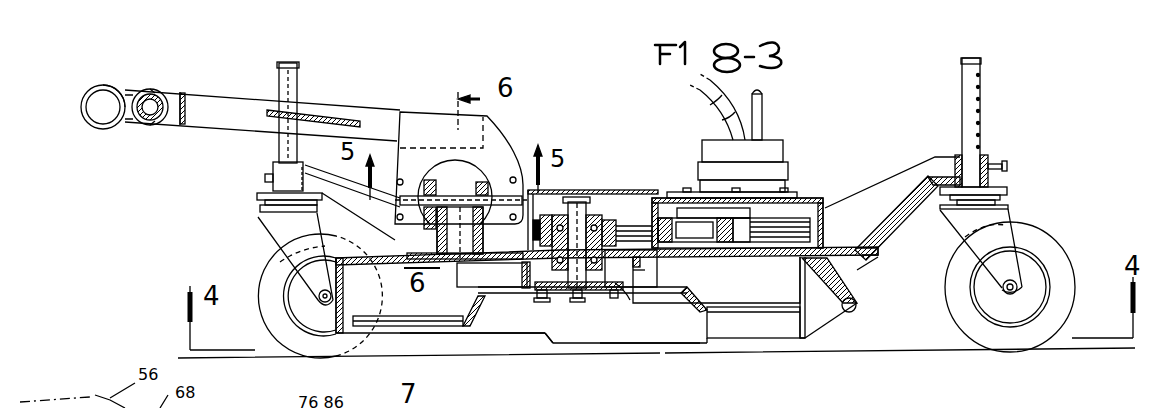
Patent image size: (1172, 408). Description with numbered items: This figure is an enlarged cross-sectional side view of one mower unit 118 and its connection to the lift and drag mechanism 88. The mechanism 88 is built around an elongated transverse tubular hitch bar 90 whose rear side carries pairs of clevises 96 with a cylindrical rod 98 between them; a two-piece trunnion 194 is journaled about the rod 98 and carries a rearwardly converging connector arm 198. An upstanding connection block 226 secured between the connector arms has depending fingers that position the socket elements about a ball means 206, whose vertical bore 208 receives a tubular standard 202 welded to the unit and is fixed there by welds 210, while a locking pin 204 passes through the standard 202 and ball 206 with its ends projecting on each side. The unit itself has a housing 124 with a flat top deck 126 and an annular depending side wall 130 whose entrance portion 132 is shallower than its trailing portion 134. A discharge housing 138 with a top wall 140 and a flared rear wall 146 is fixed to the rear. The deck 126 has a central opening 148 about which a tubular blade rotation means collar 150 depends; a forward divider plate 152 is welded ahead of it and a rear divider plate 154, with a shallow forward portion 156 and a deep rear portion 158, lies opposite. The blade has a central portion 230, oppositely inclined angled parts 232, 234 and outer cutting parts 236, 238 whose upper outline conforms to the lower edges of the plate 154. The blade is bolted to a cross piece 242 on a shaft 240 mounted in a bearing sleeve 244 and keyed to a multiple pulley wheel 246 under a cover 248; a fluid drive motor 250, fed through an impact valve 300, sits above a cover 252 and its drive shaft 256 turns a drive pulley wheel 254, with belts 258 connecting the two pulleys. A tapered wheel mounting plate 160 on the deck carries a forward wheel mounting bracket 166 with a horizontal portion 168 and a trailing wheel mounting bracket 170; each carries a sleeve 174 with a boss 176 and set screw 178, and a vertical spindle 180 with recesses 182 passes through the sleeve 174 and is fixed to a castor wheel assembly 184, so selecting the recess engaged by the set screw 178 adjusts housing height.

The mower assembly lift and drag mechanism 88 is at (101, 132).
The tubular hitch bar 90 is at (115, 88).
The clevises 96 is at (128, 126).
The cylindrical rod 98 is at (162, 128).
The trunnion 194 is at (163, 92).
The connector arm 198 is at (220, 120).
The horizontal portion 168 is at (310, 176).
The wheel mounting bracket 166 is at (355, 207).
The connection block 226 is at (428, 130).
The welds 210 is at (438, 185).
The locking pin 204 is at (470, 197).
The ball means 206 is at (440, 222).
The vertical bore 208 is at (478, 225).
The mower unit 118 is at (852, 320).
The forward divider plate 152 is at (465, 276).
The outer cutting part 236 is at (400, 324).
The tubular standard 202 is at (480, 302).
The central portion 230 is at (612, 302).
The shallow forward portion 156 is at (694, 312).
The blade rotation means collar 150 is at (630, 306).
The top deck 126 is at (712, 264).
The central opening 148 is at (640, 270).
The outer cutting part 238 is at (760, 312).
The top wall 140 is at (830, 296).
The rear wall 146 is at (857, 310).
The deep rear portion 158 is at (815, 326).
The discharge housing 138 is at (862, 292).
The rear divider plate 154 is at (785, 338).
The angled part 234 is at (714, 336).
The housing 124 is at (672, 333).
The trailing portion 134 is at (645, 345).
The side wall 130 is at (590, 328).
The entrance portion 132 is at (528, 345).
The angled part 232 is at (468, 336).
The bearing sleeve 244 is at (470, 252).
The cross piece 242 is at (560, 298).
The shaft 240 is at (595, 215).
The cover 248 is at (572, 185).
The multiple pulley wheel 246 is at (640, 215).
The drive pulley wheel 254 is at (814, 196).
The drive shaft 256 is at (745, 256).
The cover 252 is at (790, 222).
The belts 258 is at (832, 236).
The wheel mounting bracket 170 is at (895, 213).
The wheel mounting plate 160 is at (874, 250).
The fluid drive motor 250 is at (785, 153).
The impact valve 300 is at (762, 130).
The spindle 180 is at (982, 68).
The recesses 182 is at (981, 108).
The boss 176 is at (990, 162).
The set screw 178 is at (1008, 168).
The sleeve 174 is at (1010, 180).
The castor wheel assembly 184 is at (1062, 250).